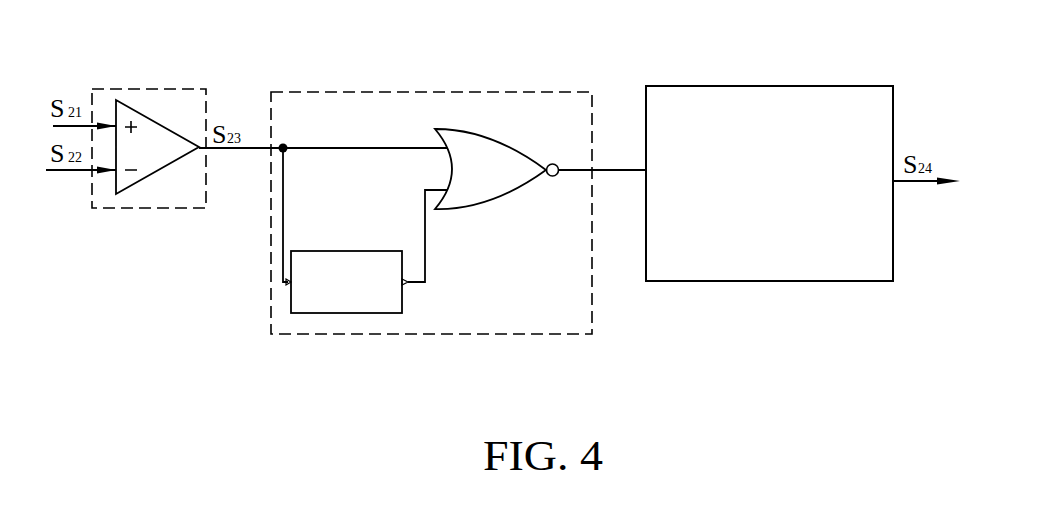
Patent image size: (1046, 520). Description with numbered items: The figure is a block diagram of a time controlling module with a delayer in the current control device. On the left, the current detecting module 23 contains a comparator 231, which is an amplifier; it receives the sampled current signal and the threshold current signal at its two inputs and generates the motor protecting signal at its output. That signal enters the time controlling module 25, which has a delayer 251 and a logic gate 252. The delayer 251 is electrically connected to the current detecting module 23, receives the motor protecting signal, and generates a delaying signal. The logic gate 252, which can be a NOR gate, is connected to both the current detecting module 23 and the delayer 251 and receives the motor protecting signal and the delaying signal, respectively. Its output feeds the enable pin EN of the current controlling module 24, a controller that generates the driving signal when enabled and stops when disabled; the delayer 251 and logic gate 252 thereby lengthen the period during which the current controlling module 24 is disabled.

The current detecting module 23 is at (149, 147).
The comparator 231 is at (117, 187).
The time controlling module 25 is at (431, 202).
The delayer 251 is at (313, 308).
The logic gate 252 is at (461, 135).
The current controlling module 24 is at (734, 92).